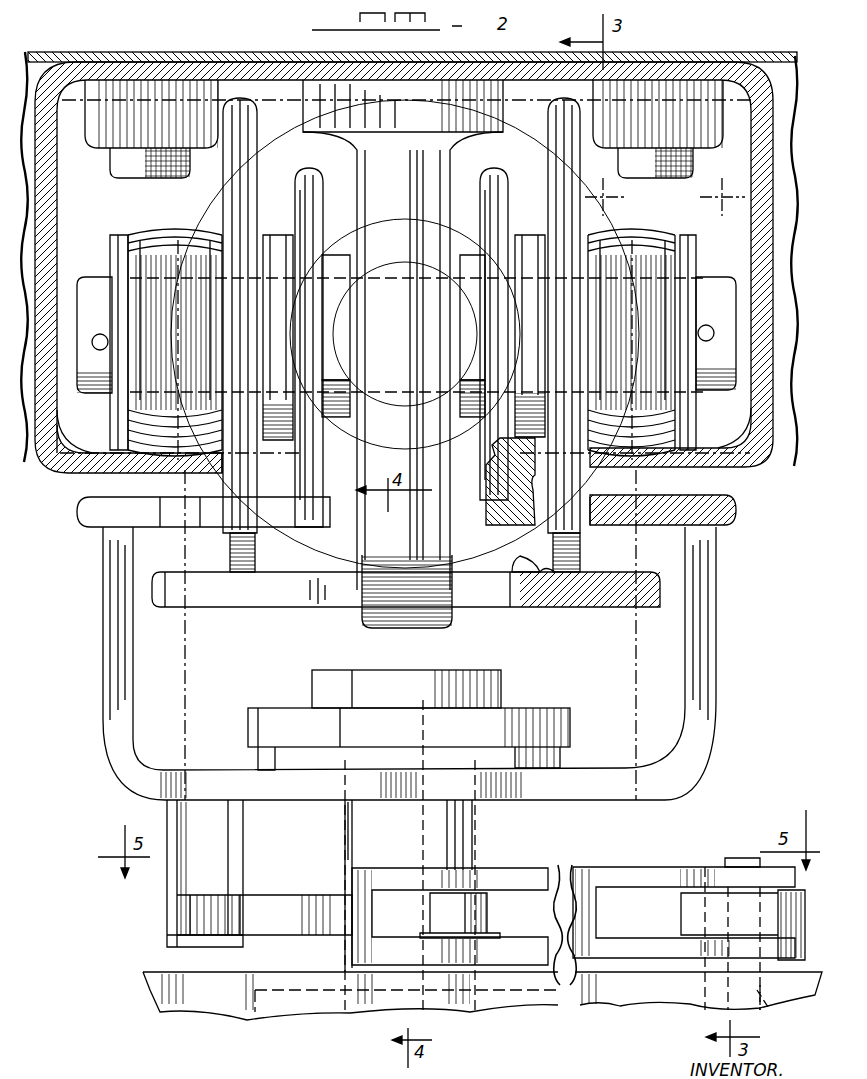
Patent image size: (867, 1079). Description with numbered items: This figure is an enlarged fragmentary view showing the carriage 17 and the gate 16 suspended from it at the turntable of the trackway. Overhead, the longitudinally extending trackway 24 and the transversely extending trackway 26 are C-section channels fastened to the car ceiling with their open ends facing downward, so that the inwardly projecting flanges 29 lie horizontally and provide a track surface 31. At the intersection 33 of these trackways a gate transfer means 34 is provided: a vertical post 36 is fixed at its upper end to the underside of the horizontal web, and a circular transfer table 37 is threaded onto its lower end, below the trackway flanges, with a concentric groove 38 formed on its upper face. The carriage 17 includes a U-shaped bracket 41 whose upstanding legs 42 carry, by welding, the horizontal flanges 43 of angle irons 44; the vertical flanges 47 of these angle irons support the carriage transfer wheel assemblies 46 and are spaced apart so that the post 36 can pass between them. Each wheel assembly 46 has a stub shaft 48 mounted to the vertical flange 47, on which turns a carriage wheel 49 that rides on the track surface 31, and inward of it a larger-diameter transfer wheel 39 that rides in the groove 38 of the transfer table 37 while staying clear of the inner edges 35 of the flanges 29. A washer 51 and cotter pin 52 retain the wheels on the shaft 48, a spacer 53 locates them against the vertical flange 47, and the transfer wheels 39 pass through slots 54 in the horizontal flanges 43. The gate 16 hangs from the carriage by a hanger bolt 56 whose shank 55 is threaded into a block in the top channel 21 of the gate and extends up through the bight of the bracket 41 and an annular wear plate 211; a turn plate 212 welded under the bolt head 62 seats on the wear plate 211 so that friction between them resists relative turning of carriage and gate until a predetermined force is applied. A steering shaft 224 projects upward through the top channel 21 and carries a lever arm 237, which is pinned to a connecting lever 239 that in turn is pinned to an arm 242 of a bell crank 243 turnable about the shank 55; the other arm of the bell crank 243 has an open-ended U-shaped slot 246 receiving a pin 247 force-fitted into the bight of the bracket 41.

The gate 16 is at (633, 988).
The gate carriage 17 is at (520, 98).
The top channel 21 is at (210, 1002).
The longitudinally extending trackway 24 is at (180, 58).
The transversely extending trackway 26 is at (52, 468).
The inwardly projecting flange 29 is at (90, 465).
The track surface 31 is at (100, 450).
The intersection 33 is at (283, 112).
The gate transfer means 34 is at (458, 606).
The inner edge 35 is at (222, 398).
The vertical post 36 is at (386, 484).
The circular transfer table 37 is at (625, 590).
The concentric groove 38 is at (592, 575).
The transfer wheel 39 is at (230, 545).
The U-shaped bracket 41 is at (664, 788).
The upstanding leg 42 is at (118, 676).
The horizontal flange 43 is at (122, 520).
The angle iron 44 is at (195, 520).
The carriage transfer wheel assembly 46 is at (174, 224).
The vertical flange 47 is at (308, 180).
The stub shaft 48 is at (108, 282).
The carriage wheel 49 is at (200, 250).
The washer 51 is at (116, 240).
The cotter pin 52 is at (106, 334).
The spacer 53 is at (282, 245).
The slot 54 is at (545, 500).
The shank 55 is at (370, 831).
The hanger bolt 56 is at (470, 865).
The bolt head 62 is at (410, 682).
The annular wear plate 211 is at (310, 770).
The turn plate 212 is at (283, 728).
The steering shaft 224 is at (752, 1000).
The lever arm 237 is at (698, 908).
The connecting lever 239 is at (632, 880).
The arm 242 is at (370, 922).
The bell crank 243 is at (275, 935).
The U-shaped slot 246 is at (287, 912).
The pin 247 is at (192, 875).